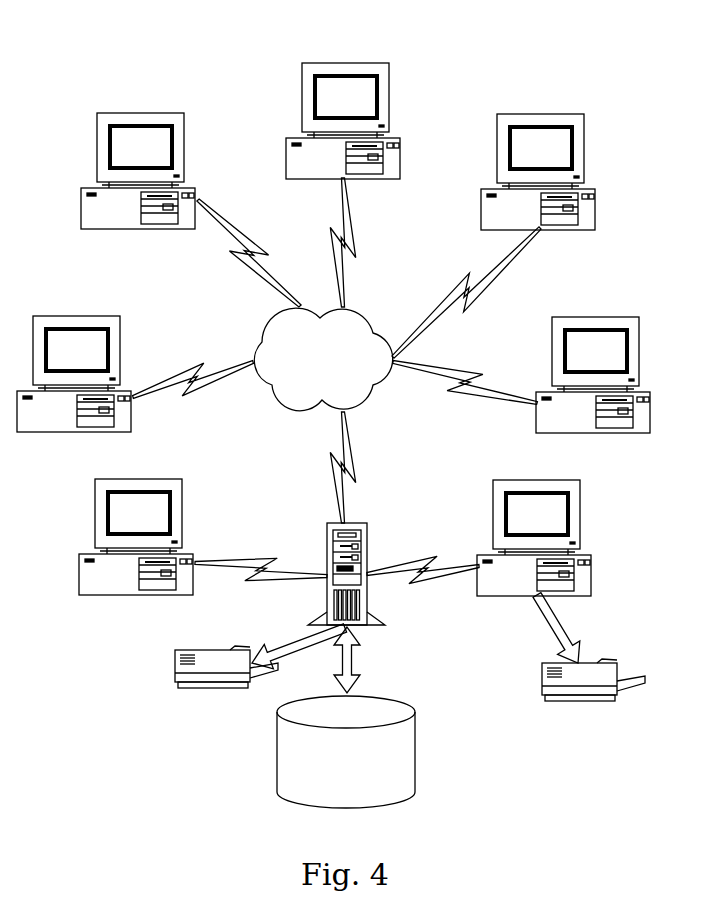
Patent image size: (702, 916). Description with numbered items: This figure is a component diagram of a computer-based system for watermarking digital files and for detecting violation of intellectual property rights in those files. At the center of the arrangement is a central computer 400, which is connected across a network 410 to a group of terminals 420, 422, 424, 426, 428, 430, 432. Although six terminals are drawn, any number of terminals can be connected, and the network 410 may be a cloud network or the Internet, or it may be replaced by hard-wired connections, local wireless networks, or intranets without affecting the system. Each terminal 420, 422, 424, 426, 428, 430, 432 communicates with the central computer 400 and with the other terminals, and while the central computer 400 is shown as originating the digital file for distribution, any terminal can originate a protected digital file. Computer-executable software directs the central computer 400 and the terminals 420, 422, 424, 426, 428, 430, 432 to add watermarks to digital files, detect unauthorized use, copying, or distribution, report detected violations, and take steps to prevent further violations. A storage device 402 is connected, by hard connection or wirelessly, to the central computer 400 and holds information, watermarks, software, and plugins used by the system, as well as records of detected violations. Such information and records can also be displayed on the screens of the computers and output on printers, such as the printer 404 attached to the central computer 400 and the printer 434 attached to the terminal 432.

The central computer 400 is at (367, 573).
The storage device 402 is at (378, 695).
The printer 404 is at (197, 650).
The network 410 is at (380, 305).
The terminal 420 is at (182, 505).
The terminal 422 is at (120, 320).
The terminal 424 is at (143, 113).
The terminal 426 is at (343, 63).
The terminal 428 is at (540, 113).
The terminal 430 is at (595, 316).
The terminal 432 is at (582, 507).
The printer 434 is at (602, 662).